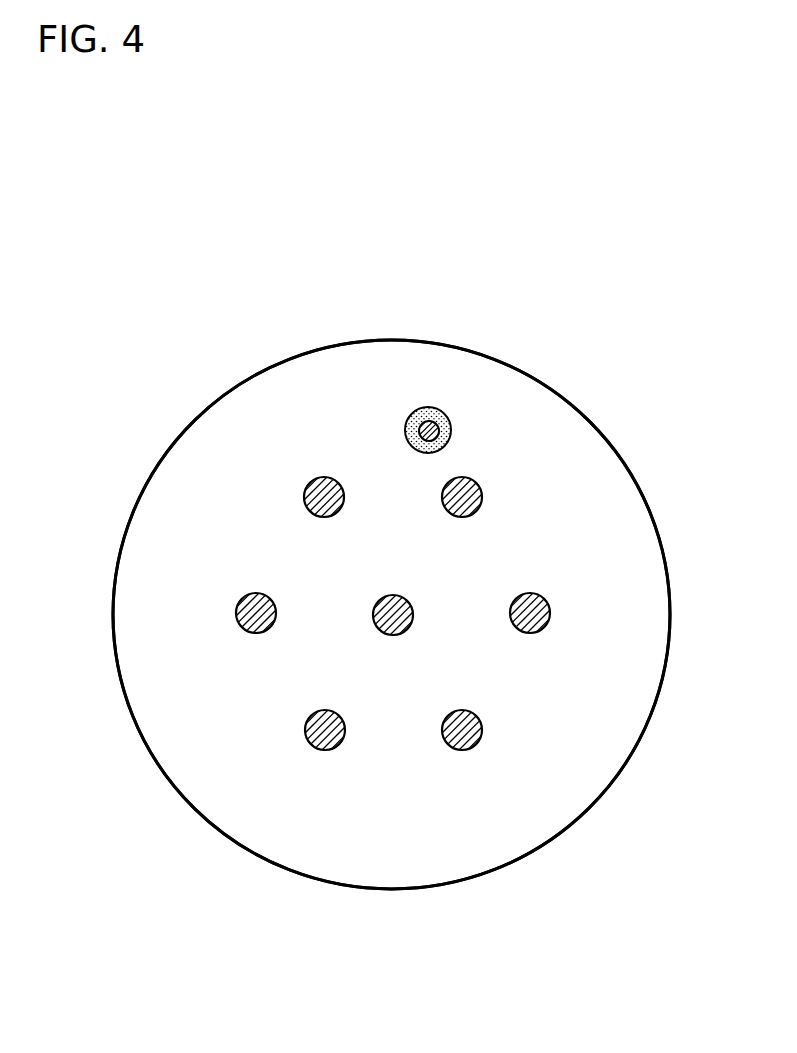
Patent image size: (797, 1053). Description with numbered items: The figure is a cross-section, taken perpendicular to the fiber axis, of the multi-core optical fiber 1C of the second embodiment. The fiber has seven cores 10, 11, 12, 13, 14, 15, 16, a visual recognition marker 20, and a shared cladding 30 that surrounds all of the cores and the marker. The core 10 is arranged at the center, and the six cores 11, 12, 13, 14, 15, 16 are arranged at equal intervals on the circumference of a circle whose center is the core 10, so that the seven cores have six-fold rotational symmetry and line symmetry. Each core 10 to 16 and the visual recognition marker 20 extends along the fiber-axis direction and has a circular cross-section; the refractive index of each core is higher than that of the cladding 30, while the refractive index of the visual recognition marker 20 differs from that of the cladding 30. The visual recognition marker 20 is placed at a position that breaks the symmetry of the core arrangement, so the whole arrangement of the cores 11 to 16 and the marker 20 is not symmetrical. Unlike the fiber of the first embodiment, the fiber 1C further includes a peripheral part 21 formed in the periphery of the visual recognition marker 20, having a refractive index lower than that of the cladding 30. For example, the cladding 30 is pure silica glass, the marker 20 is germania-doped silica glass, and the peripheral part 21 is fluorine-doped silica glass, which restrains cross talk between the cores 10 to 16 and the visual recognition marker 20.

The multi-core optical fiber 1C is at (594, 297).
The shared cladding 30 is at (567, 422).
The core 10 is at (400, 593).
The core 11 is at (550, 612).
The core 12 is at (480, 743).
The core 13 is at (307, 747).
The core 14 is at (236, 612).
The core 15 is at (304, 492).
The core 16 is at (478, 481).
The visual recognition marker 20 is at (415, 426).
The peripheral part 21 is at (436, 424).